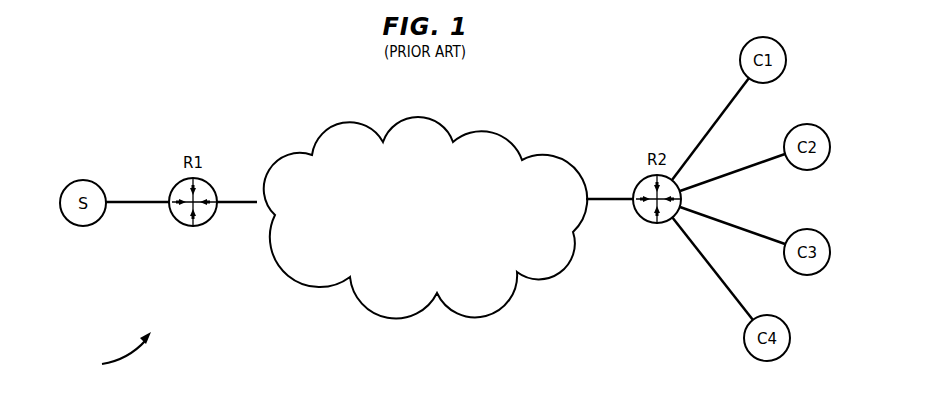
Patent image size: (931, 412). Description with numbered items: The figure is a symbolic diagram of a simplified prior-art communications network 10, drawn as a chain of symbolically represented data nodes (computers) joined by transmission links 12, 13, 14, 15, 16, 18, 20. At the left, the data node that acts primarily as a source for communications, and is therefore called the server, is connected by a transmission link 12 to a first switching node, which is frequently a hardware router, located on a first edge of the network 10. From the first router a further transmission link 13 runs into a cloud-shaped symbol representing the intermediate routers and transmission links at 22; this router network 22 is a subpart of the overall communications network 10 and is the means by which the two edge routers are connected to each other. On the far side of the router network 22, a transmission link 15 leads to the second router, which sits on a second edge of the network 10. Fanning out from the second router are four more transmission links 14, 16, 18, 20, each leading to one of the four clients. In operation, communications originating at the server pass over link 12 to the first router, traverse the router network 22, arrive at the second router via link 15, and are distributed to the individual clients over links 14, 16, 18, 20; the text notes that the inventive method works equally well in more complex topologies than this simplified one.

The communications network 10 is at (113, 355).
The transmission link 12 is at (130, 203).
The transmission link 13 is at (240, 203).
The router network 22 is at (507, 137).
The transmission link 15 is at (611, 200).
The transmission link 14 is at (717, 117).
The transmission link 16 is at (763, 155).
The transmission link 18 is at (757, 238).
The transmission link 20 is at (725, 291).